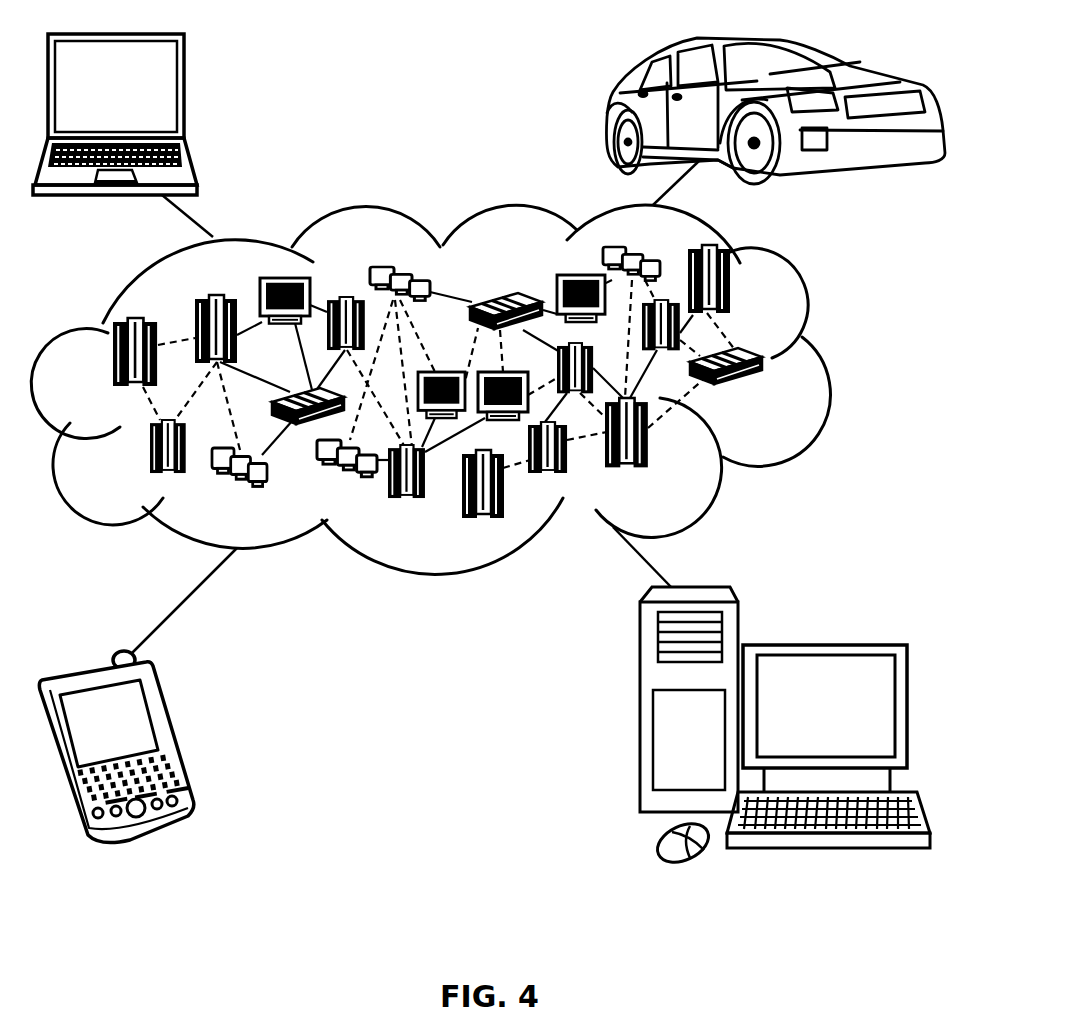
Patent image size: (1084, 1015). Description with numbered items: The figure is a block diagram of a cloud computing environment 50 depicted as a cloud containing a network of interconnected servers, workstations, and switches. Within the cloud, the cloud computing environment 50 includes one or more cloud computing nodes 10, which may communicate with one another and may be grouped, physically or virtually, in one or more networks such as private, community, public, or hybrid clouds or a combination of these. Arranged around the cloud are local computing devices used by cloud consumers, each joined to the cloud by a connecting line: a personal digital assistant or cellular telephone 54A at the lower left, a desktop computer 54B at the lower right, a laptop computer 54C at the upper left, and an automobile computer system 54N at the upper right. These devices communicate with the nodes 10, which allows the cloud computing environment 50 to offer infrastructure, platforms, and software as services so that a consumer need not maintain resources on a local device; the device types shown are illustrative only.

The cloud computing environment 50 is at (827, 362).
The cloud computing node 10 is at (777, 394).
The personal digital assistant or cellular telephone 54A is at (173, 735).
The desktop computer 54B is at (822, 645).
The laptop computer 54C is at (184, 92).
The automobile computer system 54N is at (608, 107).